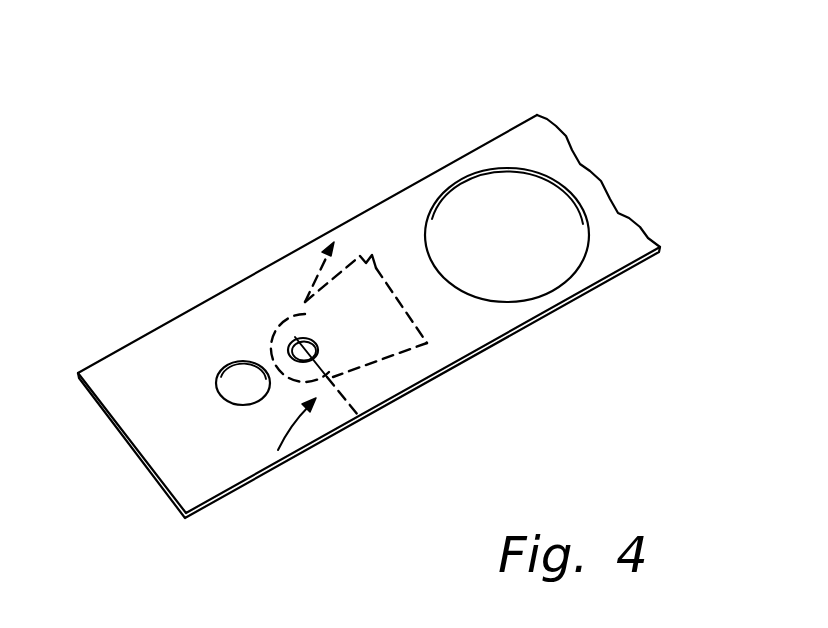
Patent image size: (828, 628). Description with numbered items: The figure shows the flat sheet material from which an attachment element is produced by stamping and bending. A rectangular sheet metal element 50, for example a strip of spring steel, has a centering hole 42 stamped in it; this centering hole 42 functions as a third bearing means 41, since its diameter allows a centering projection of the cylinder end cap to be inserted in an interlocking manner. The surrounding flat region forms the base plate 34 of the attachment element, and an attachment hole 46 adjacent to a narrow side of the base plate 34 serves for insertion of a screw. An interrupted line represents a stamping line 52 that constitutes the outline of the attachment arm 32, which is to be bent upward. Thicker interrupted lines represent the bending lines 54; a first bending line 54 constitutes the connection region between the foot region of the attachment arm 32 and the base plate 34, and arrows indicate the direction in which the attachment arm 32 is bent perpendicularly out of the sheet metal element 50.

The attachment arm 32 is at (382, 338).
The base plate 34 is at (507, 147).
The third bearing means 41 is at (541, 291).
The centering hole 42 is at (526, 286).
The attachment hole 46 is at (225, 383).
The sheet metal element 50 is at (300, 204).
The stamping line 52 is at (405, 352).
The bending line 54 is at (290, 327).